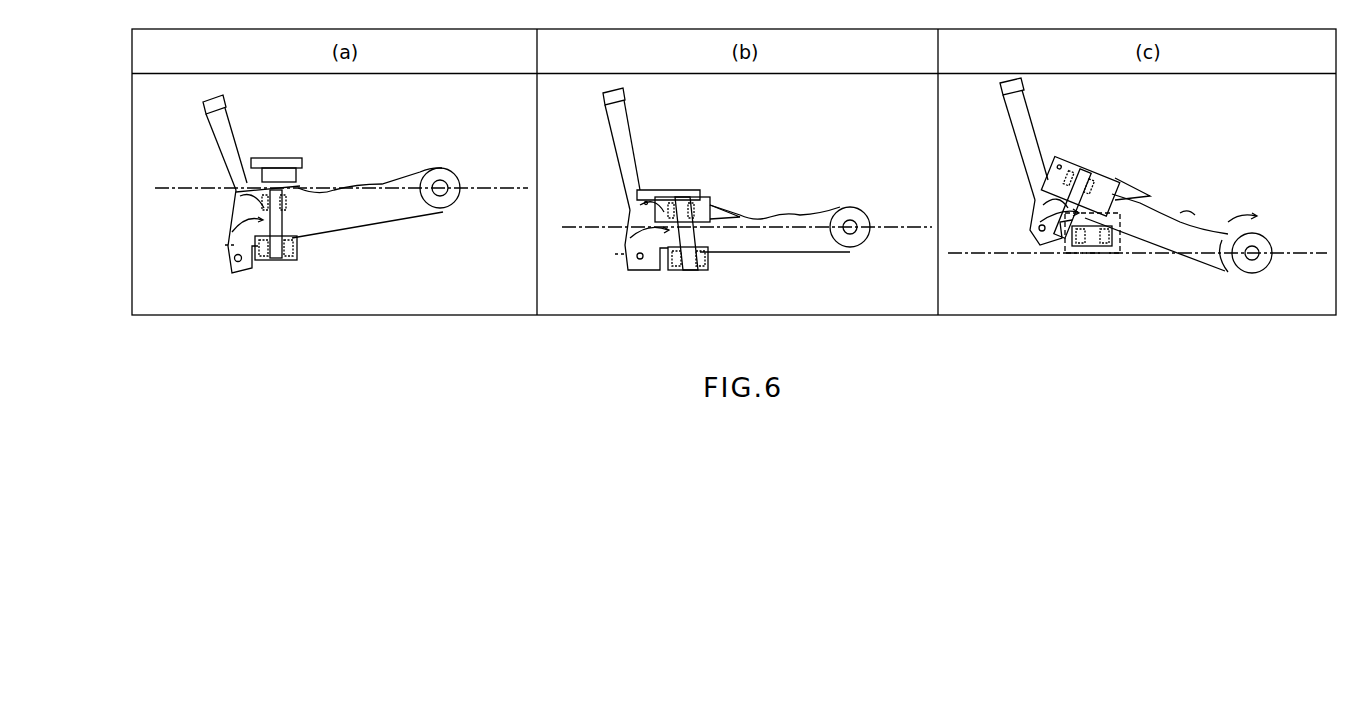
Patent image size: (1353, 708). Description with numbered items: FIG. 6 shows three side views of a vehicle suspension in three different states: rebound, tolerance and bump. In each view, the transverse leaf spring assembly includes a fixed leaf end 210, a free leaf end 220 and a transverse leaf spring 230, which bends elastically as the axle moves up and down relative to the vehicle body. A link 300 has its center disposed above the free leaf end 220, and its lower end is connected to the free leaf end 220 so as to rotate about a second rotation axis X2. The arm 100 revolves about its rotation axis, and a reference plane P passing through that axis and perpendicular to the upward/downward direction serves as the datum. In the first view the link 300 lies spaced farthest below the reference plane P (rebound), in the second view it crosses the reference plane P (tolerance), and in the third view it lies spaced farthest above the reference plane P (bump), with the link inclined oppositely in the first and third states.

The arm 100 is at (803, 245).
The fixed leaf end 210 is at (297, 160).
The free leaf end 220 is at (288, 260).
The transverse leaf spring 230 is at (280, 177).
The link 300 is at (230, 230).
The second rotation axis X2 is at (305, 245).
The reference plane P is at (490, 188).